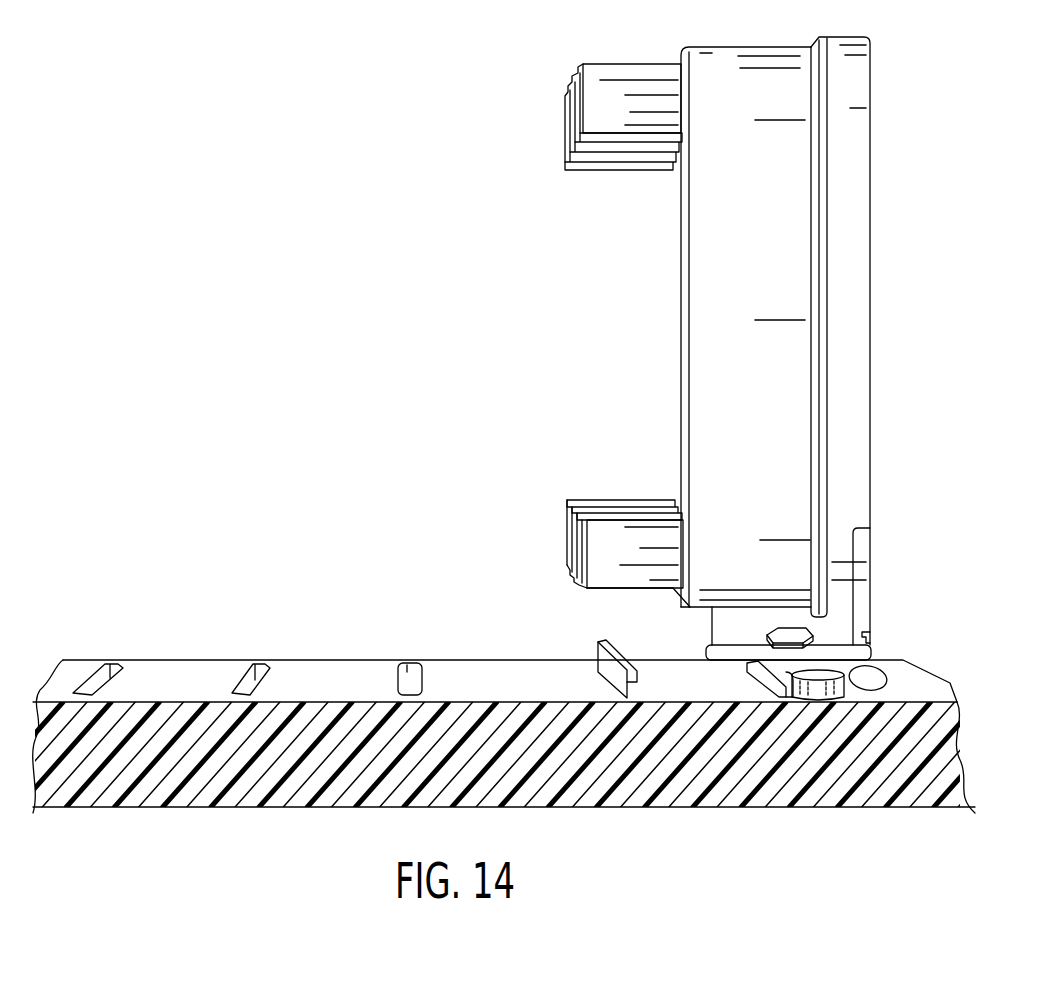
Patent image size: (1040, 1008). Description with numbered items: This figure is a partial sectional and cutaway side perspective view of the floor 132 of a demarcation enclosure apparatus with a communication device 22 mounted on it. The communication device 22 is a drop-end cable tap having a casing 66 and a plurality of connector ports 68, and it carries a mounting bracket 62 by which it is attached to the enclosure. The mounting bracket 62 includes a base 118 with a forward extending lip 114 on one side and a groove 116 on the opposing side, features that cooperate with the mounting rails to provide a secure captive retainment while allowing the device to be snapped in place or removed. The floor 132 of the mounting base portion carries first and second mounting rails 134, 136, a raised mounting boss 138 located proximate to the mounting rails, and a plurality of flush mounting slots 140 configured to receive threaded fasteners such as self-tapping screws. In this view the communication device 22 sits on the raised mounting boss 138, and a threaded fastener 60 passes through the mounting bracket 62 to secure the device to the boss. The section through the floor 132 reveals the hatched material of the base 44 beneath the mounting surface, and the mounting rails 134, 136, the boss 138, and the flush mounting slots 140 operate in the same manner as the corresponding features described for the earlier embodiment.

The communication device 22 is at (766, 399).
The panel 44 is at (872, 680).
The threaded fastener 60 is at (792, 633).
The mounting bracket 62 is at (724, 625).
The casing 66 is at (798, 98).
The connector ports 68 is at (617, 62).
The forward extending lip 114 is at (707, 650).
The groove 116 is at (866, 640).
The base 118 is at (747, 653).
The floor 132 is at (447, 667).
The first mounting rail 134 is at (773, 697).
The second mounting rail 136 is at (600, 642).
The raised mounting boss 138 is at (847, 677).
The flush mounting slots 140 is at (405, 665).